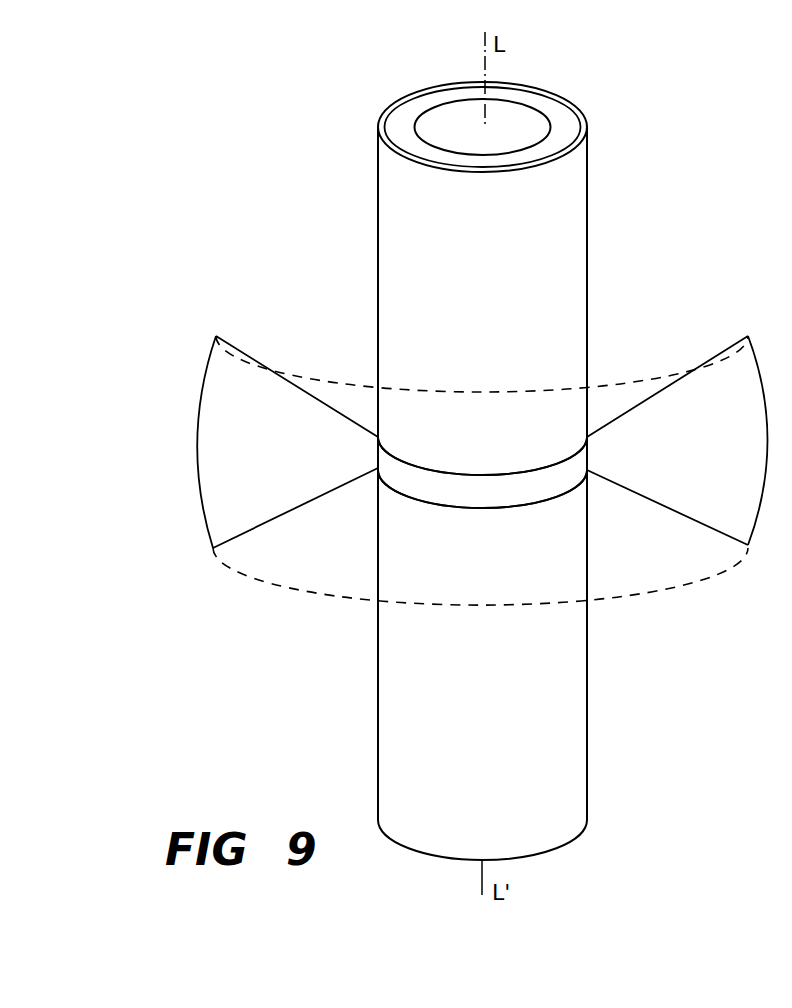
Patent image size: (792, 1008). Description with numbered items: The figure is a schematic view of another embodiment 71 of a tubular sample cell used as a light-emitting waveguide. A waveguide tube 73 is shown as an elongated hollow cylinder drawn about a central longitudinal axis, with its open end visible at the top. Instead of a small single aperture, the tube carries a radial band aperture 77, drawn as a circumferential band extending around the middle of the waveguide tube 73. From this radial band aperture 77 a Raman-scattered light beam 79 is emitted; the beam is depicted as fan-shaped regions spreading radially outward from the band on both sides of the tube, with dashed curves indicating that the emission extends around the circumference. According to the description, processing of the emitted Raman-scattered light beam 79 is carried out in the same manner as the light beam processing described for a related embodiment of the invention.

The embodiment 71 is at (321, 133).
The waveguide tube 73 is at (562, 115).
The radial band aperture 77 is at (447, 498).
The Raman-scattered light beam 79 is at (705, 393).